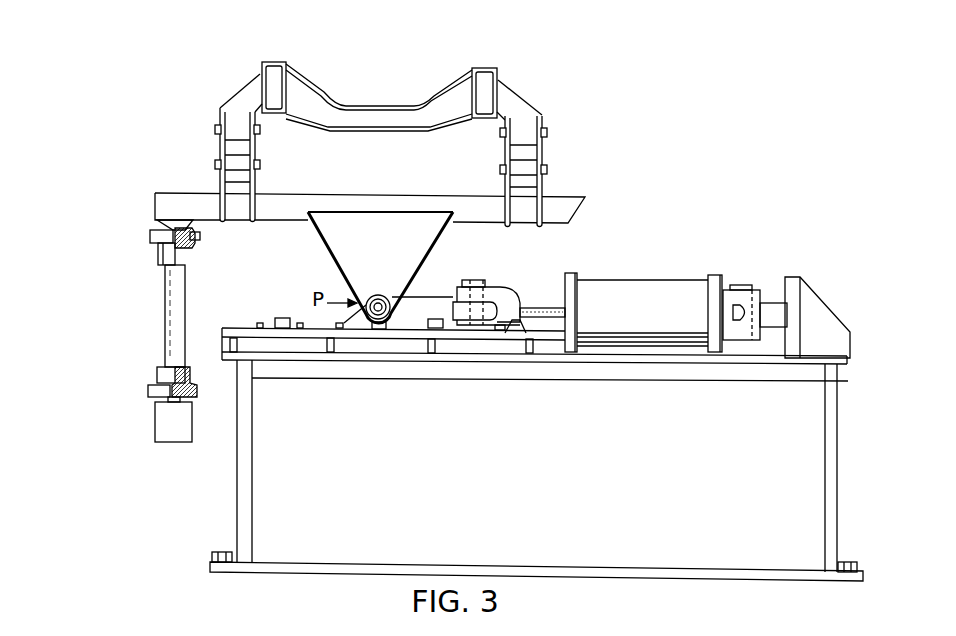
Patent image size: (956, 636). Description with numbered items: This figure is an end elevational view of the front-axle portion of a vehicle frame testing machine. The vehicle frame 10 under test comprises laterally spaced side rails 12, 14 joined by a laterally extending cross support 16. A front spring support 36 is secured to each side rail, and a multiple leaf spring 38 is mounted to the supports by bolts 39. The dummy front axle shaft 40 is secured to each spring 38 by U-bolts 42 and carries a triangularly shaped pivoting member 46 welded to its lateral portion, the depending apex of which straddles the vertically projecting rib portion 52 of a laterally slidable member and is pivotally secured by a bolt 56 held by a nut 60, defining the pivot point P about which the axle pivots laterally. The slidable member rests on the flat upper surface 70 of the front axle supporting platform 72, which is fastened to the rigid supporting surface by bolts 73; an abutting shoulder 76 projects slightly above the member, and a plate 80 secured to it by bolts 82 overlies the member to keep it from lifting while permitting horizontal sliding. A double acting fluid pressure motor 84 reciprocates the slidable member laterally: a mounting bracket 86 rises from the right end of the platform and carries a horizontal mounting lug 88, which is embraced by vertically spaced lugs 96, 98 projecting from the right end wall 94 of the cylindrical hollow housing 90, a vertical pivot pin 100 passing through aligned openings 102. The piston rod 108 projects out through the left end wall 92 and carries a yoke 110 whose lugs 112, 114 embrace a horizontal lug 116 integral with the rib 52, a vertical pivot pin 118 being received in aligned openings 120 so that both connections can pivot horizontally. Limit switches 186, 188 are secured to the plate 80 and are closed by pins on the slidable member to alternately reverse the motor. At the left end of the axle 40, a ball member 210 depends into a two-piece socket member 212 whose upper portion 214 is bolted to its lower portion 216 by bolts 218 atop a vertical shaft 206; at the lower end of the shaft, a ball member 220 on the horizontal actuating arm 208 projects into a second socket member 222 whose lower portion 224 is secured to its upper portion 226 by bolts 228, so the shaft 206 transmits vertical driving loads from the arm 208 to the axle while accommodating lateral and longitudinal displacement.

The vehicle frame 10 is at (497, 65).
The side rail 12 is at (273, 62).
The side rail 14 is at (479, 68).
The cross support 16 is at (366, 108).
The front spring support 36 is at (245, 96).
The multiple leaf spring 38 is at (232, 185).
The bolts 39 is at (259, 140).
The dummy front axle shaft 40 is at (362, 194).
The U-bolts 42 is at (255, 195).
The triangularly shaped pivoting member 46 is at (338, 240).
The rib portion 52 is at (412, 305).
The bolt 56 is at (387, 307).
The nut 60 is at (375, 296).
The upper surface 70 is at (545, 356).
The front axle supporting platform 72 is at (828, 467).
The bolts 73 is at (847, 558).
The abutting shoulder 76 is at (268, 348).
The plate 80 is at (245, 329).
The bolts 82 is at (306, 320).
The double acting fluid pressure motor 84 is at (637, 278).
The mounting bracket 86 is at (815, 303).
The horizontal mounting lug 88 is at (767, 303).
The cylindrical hollow housing 90 is at (675, 281).
The left end wall 92 is at (571, 274).
The right end wall 94 is at (712, 273).
The horizontal mounting lug 96 is at (757, 288).
The horizontal mounting lug 98 is at (762, 340).
The vertical pivot pin 100 is at (742, 342).
The aligned openings 102 is at (733, 310).
The piston rod 108 is at (545, 308).
The yoke 110 is at (520, 327).
The horizontal lug 112 is at (462, 285).
The horizontal lug 114 is at (487, 325).
The horizontal lug 116 is at (460, 313).
The vertical pivot pin 118 is at (475, 281).
The aligned openings 120 is at (475, 330).
The limit switch 186 is at (283, 318).
The limit switch 188 is at (438, 322).
The shaft 206 is at (170, 292).
The actuating arm 208 is at (163, 418).
The ball member 210 is at (172, 225).
The two-piece socket member 212 is at (150, 236).
The upper portion 214 is at (198, 235).
The lower portion 216 is at (200, 245).
The bolts 218 is at (153, 246).
The ball member 220 is at (175, 398).
The second two-piece socket member 222 is at (155, 374).
The lower portion 224 is at (196, 392).
The upper portion 226 is at (185, 372).
The bolts 228 is at (153, 392).